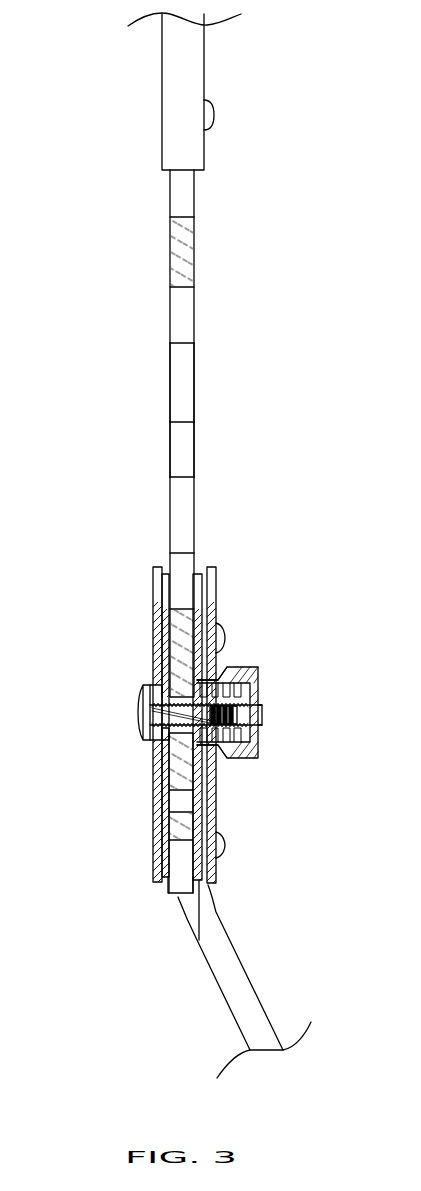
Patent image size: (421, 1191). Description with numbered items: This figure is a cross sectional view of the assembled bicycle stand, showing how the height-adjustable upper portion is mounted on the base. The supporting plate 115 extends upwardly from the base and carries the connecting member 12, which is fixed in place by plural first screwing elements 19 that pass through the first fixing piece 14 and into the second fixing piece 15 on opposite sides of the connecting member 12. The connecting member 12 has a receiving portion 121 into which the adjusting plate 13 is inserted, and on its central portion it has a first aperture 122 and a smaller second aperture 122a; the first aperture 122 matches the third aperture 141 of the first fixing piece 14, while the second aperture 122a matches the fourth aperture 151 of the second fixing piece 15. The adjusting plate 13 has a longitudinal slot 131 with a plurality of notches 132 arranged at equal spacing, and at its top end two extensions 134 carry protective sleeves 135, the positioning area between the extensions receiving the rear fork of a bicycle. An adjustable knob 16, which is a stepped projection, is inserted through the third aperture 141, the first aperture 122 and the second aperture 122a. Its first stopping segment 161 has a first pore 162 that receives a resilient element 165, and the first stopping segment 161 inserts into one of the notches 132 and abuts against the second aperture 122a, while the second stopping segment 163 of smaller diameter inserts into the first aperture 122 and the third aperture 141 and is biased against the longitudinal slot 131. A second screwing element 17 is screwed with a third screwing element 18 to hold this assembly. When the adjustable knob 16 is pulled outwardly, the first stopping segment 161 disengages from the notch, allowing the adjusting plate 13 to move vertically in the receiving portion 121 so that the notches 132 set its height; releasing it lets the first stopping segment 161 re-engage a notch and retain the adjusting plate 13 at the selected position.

The connecting member 12 is at (130, 770).
The receiving portion 121 is at (170, 895).
The first aperture 122 is at (249, 813).
The second aperture 122a is at (155, 740).
The adjusting plate 13 is at (119, 433).
The longitudinal slot 131 is at (177, 372).
The notches 132 is at (177, 452).
The extensions 134 is at (186, 80).
The protective sleeves 135 is at (215, 91).
The first fixing piece 14 is at (265, 757).
The third aperture 141 is at (217, 663).
The second fixing piece 15 is at (177, 724).
The fourth aperture 151 is at (138, 707).
The adjustable knob 16 is at (269, 720).
The first stopping segment 161 is at (212, 762).
The first pore 162 is at (240, 740).
The second stopping segment 163 is at (168, 667).
The resilient element 165 is at (228, 688).
The second screwing element 17 is at (253, 694).
The third screwing element 18 is at (137, 717).
The first screwing elements 19 is at (225, 640).
The supporting plate 115 is at (218, 955).